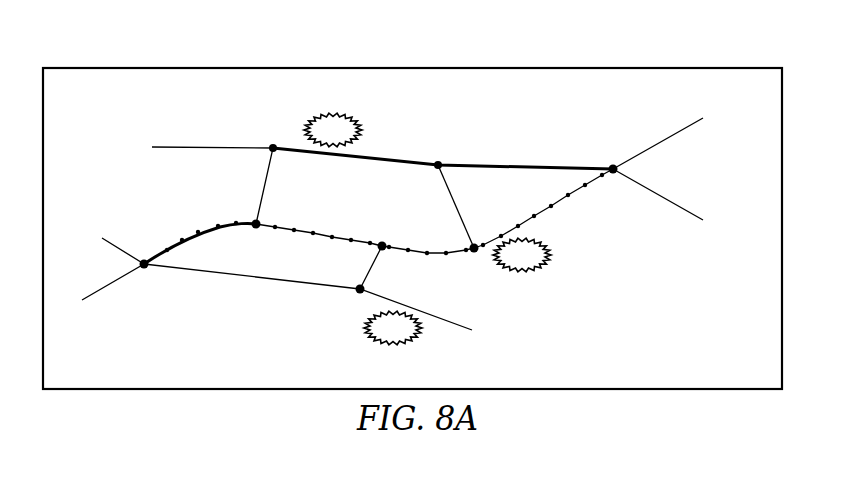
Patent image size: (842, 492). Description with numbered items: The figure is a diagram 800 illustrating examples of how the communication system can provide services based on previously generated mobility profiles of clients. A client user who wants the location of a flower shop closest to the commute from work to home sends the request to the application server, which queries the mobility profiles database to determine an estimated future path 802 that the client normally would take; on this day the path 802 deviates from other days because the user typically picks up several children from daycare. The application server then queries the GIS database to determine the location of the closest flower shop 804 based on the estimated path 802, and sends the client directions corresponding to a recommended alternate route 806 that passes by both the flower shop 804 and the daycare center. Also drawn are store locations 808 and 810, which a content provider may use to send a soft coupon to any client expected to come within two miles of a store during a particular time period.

The diagram 800 is at (292, 64).
The estimated future path 802 is at (576, 191).
The flower shop 804 is at (305, 129).
The recommended alternate route 806 is at (522, 165).
The store location 808 is at (550, 254).
The store location 810 is at (367, 328).